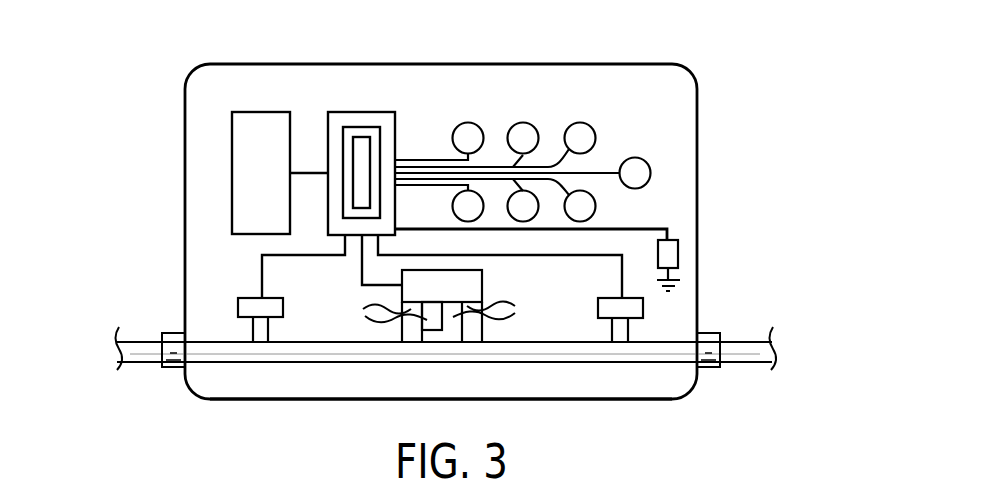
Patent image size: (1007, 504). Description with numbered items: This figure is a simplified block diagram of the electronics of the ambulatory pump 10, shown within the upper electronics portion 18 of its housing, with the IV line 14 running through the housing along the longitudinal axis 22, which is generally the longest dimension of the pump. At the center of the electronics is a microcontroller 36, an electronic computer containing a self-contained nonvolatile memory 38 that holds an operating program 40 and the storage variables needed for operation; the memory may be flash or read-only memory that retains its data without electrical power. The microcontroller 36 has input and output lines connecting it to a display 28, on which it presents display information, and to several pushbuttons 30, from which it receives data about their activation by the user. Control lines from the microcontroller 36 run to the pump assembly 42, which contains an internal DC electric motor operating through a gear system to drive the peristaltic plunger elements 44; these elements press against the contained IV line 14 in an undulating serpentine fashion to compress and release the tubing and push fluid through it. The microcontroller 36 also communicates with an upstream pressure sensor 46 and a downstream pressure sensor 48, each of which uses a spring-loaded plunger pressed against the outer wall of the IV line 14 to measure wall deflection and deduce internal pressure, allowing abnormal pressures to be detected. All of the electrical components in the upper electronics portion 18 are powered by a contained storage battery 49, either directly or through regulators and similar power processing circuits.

The ambulatory pump 10 is at (675, 31).
The IV line 14 is at (140, 362).
The upper electronics portion 18 is at (678, 64).
The longitudinal axis 22 is at (640, 399).
The display 28 is at (260, 112).
The pushbuttons 30 is at (468, 123).
The microcontroller 36 is at (330, 112).
The nonvolatile memory 38 is at (362, 127).
The operating program 40 is at (370, 150).
The pump assembly 42 is at (483, 283).
The peristaltic plunger elements 44 is at (438, 310).
The upstream pressure sensor 46 is at (238, 304).
The downstream pressure sensor 48 is at (643, 307).
The storage battery 49 is at (680, 252).